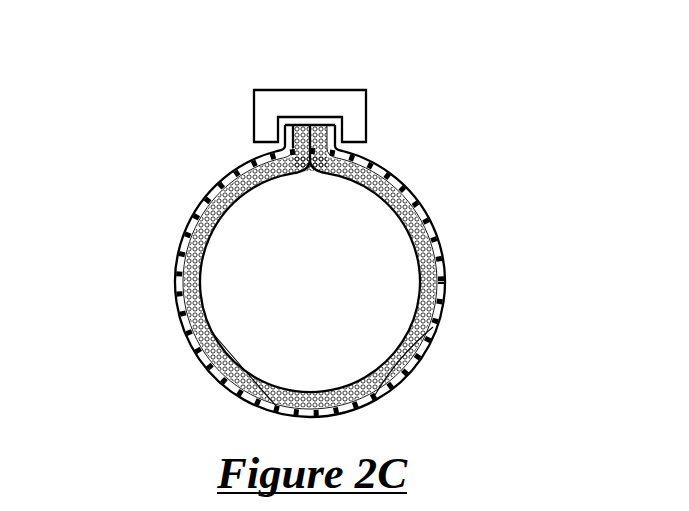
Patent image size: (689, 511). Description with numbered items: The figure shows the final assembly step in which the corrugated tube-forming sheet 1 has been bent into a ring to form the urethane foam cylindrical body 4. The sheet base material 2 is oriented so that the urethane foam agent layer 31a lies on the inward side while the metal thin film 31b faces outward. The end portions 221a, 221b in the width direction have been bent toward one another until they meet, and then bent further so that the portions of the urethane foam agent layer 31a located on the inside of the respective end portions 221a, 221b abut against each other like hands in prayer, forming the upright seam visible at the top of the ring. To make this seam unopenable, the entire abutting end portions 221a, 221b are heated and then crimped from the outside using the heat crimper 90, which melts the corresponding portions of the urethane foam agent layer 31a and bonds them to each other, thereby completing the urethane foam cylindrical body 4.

The sheet for forming a radiant heat shielding corrugated tube 1 is at (462, 228).
The sheet base material 2 is at (184, 316).
The urethane foam cylindrical body 4 is at (474, 148).
The urethane foam agent layer 31a is at (224, 338).
The metal thin film 31b is at (177, 288).
The heat crimper 90 is at (333, 90).
The end portion in the width direction 221a is at (347, 148).
The end portion in the width direction 221b is at (273, 148).